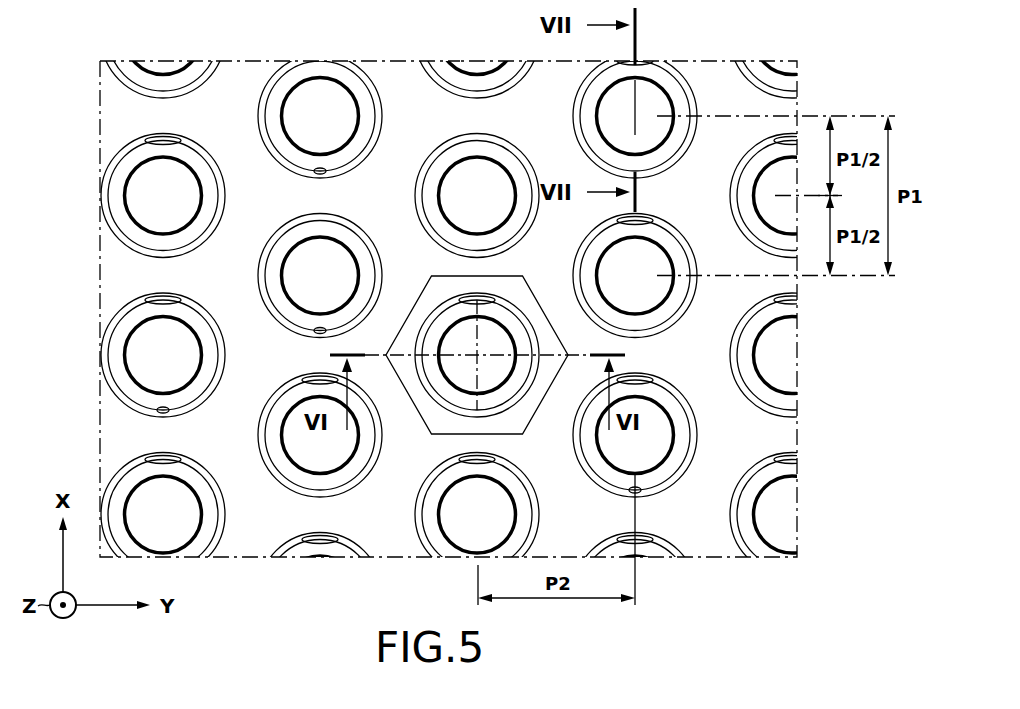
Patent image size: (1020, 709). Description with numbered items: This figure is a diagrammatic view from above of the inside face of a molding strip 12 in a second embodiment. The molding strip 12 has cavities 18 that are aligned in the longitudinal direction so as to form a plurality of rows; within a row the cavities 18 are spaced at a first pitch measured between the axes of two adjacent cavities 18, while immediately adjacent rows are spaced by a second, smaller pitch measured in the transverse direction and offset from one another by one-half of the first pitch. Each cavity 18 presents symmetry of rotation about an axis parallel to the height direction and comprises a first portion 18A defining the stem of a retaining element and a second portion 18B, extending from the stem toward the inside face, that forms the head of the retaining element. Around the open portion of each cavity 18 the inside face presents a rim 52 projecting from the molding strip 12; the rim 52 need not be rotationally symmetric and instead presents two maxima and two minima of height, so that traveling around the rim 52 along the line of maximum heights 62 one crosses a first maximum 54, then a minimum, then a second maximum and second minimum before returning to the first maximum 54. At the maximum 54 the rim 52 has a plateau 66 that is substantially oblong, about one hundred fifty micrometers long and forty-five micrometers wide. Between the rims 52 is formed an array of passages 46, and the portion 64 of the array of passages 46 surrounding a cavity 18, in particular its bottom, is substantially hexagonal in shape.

The molding strip 12 is at (96, 90).
The cavity 18 is at (151, 210).
The first portion of the cavity 18A is at (510, 377).
The second portion of the cavity 18B is at (448, 318).
The array of passages 46 is at (397, 76).
The rim 52 is at (526, 316).
The first maximum 54 is at (477, 296).
The line of maximum heights 62 is at (108, 196).
The hexagonal portion of the array of passages 64 is at (428, 430).
The plateau 66 is at (153, 141).